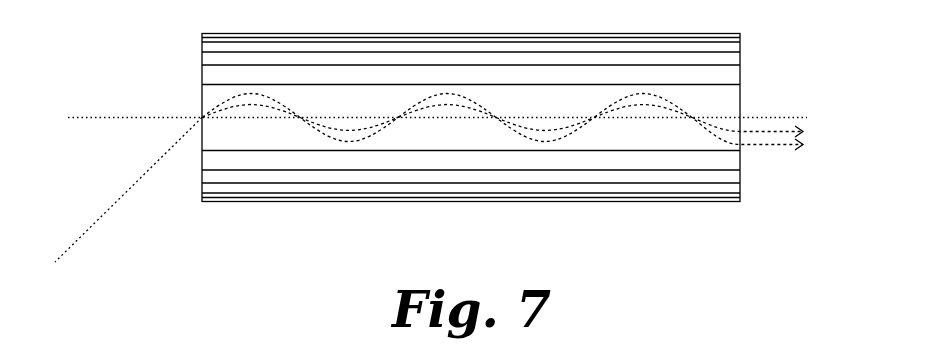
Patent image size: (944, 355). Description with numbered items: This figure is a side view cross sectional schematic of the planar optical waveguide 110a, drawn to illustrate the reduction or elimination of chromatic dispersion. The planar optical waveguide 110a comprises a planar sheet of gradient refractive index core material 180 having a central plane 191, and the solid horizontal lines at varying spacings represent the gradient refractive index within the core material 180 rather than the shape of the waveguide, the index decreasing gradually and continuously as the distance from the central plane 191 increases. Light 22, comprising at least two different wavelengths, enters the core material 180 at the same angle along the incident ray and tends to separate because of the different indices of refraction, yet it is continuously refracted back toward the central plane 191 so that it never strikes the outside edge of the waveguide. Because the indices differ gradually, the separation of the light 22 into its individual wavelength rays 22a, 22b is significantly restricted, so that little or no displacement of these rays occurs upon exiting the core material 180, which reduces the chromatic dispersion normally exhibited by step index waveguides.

The light 22 is at (62, 250).
The first exiting light beam component 22a is at (757, 147).
The second exiting light beam component 22b is at (773, 130).
The planar optical waveguide 110a is at (541, 118).
The gradient refractive index core 180 is at (808, 202).
The central plane 191 is at (108, 118).